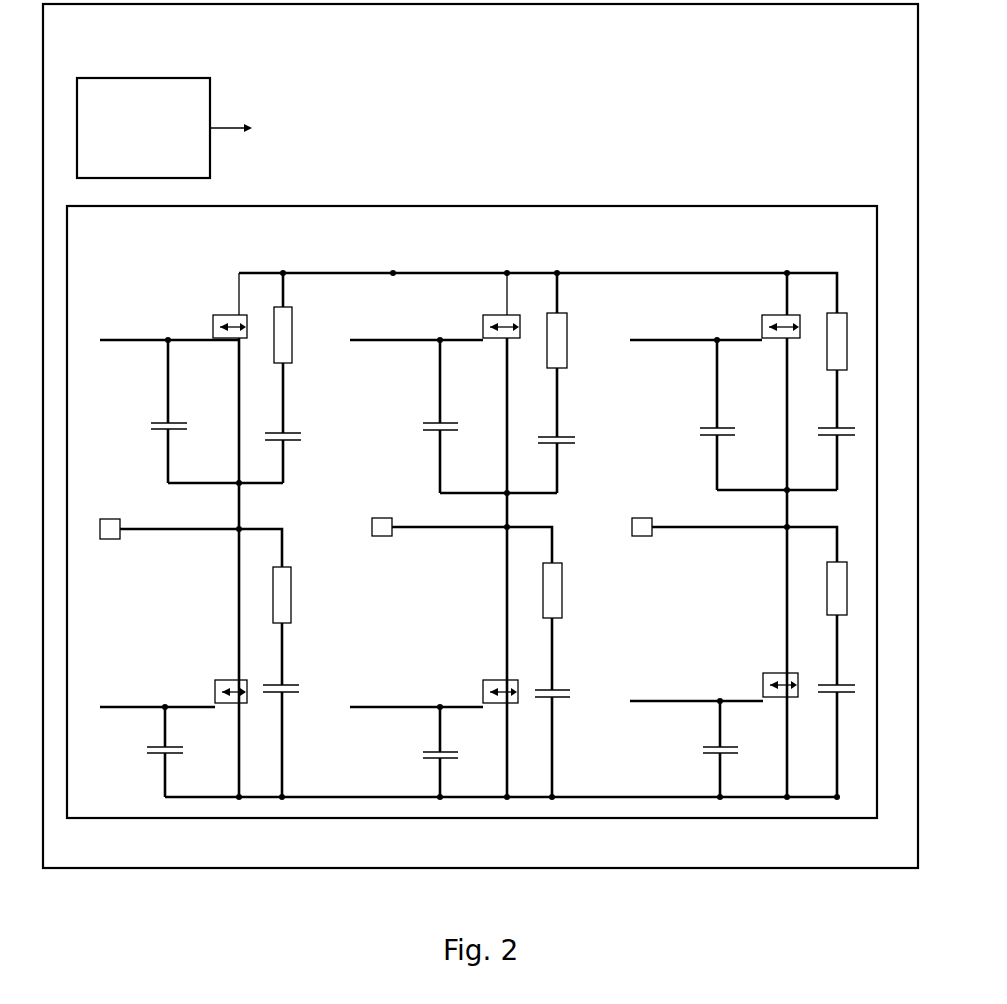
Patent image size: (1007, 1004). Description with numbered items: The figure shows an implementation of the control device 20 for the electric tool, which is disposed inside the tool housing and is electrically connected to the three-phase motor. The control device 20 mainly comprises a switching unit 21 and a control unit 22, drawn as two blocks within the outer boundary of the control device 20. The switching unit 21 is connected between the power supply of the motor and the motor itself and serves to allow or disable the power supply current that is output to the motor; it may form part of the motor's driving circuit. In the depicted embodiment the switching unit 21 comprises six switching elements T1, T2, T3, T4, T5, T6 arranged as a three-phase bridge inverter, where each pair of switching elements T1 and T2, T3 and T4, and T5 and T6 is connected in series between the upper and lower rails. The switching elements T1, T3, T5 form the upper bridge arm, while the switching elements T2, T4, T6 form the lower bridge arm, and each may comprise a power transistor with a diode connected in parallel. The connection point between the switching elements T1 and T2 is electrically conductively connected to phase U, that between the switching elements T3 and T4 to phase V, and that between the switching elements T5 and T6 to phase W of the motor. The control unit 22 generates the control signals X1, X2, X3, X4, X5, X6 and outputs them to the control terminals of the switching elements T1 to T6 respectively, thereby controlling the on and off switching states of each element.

The control device 20 is at (480, 436).
The switching unit 21 is at (472, 512).
The control unit 22 is at (218, 128).
The switching element T1 is at (226, 310).
The switching element T2 is at (226, 674).
The switching element T3 is at (496, 310).
The switching element T4 is at (491, 674).
The switching element T5 is at (774, 310).
The switching element T6 is at (771, 667).
The control signal X1 is at (188, 321).
The control signal X2 is at (203, 686).
The control signal X3 is at (450, 323).
The control signal X4 is at (468, 688).
The control signal X5 is at (742, 324).
The control signal X6 is at (752, 683).
The phase U is at (109, 508).
The phase V is at (380, 507).
The phase W is at (638, 510).